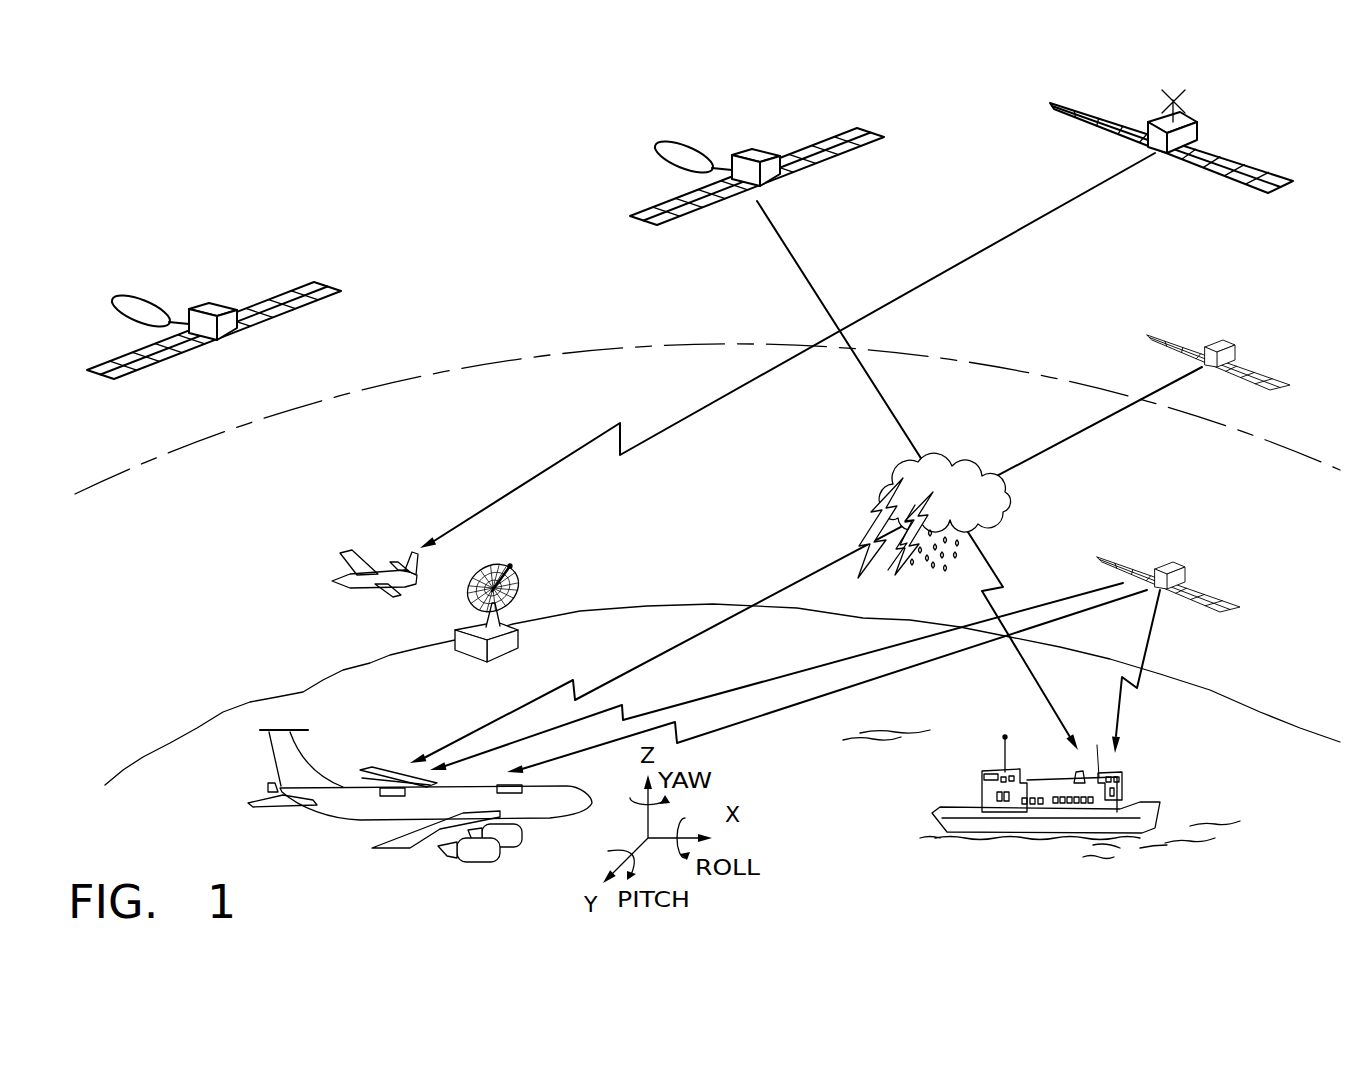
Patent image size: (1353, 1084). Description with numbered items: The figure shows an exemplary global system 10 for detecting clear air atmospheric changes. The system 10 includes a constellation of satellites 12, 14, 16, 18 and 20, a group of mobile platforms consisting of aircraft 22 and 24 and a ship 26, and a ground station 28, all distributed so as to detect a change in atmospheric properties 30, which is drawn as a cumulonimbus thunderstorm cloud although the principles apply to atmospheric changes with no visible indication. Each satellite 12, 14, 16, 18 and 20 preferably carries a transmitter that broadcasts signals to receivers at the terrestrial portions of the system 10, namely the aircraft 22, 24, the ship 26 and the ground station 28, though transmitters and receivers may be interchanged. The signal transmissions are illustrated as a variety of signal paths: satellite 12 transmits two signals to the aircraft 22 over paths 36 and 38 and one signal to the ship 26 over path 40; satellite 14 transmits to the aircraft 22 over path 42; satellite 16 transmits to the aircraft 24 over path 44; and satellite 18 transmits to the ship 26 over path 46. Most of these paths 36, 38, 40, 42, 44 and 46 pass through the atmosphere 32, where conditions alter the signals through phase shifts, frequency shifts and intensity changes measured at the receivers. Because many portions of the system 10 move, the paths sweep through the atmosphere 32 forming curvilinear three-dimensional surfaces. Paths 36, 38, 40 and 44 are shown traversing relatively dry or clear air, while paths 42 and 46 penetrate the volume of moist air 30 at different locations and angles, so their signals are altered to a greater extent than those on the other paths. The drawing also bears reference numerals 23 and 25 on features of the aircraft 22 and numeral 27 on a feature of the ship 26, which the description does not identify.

The system 10 is at (334, 140).
The satellite 12 is at (1172, 567).
The satellite 14 is at (1223, 345).
The satellite 16 is at (1187, 133).
The satellite 18 is at (760, 155).
The satellite 20 is at (217, 310).
The aircraft 22 is at (403, 784).
The antenna 23 is at (387, 802).
The aircraft 24 is at (353, 586).
The antenna 25 is at (520, 795).
The ship 26 is at (1041, 782).
The antenna 27 is at (1097, 742).
The ground station 28 is at (507, 645).
The change in atmospheric properties 30 is at (905, 470).
The atmosphere 32 is at (243, 598).
The path 36 is at (1090, 592).
The path 38 is at (900, 672).
The path 40 is at (1120, 708).
The path 42 is at (1055, 443).
The path 44 is at (1000, 240).
The path 46 is at (798, 272).